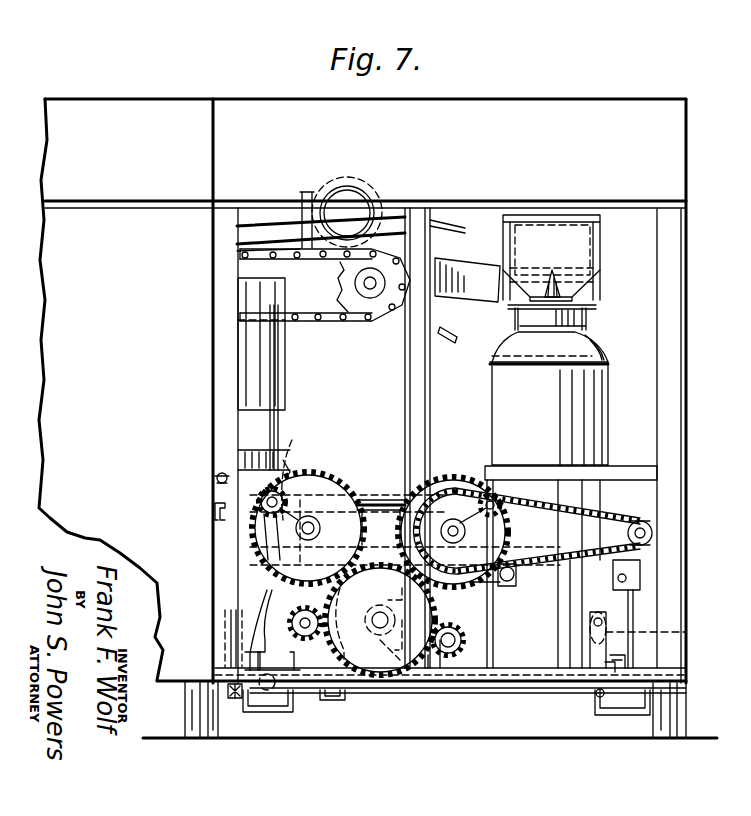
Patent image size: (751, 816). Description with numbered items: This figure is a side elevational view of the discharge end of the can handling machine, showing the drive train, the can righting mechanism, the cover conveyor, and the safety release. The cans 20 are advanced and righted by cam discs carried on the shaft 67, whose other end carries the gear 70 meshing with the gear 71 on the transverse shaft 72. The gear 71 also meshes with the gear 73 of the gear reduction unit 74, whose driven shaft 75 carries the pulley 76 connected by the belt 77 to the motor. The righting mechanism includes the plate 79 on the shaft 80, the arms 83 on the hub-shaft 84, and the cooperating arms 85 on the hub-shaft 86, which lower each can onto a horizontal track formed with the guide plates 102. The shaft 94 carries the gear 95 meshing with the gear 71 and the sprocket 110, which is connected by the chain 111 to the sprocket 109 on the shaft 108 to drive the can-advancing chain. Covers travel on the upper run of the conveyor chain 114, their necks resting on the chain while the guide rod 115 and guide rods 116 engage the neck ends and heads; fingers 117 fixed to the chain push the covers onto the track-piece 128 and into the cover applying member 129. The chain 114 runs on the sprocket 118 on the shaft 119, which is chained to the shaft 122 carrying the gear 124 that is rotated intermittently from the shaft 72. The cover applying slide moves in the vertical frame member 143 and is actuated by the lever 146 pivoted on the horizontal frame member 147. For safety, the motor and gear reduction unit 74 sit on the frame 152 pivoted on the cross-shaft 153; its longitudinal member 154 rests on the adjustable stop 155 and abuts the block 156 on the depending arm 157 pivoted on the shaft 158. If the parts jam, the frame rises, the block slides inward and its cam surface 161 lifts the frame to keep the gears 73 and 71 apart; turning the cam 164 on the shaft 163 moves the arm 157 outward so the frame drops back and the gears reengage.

The container 20 is at (250, 352).
The shaft 67 is at (318, 526).
The gear 70 is at (316, 478).
The gear 71 is at (378, 660).
The transverse shaft 72 is at (380, 610).
The gear 73 is at (305, 610).
The gear reduction unit 74 is at (300, 568).
The driven shaft 75 is at (262, 620).
The pulley 76 is at (225, 626).
The belt 77 is at (232, 700).
The plate 79 is at (250, 472).
The shaft 80 is at (214, 484).
The arms 83 is at (280, 368).
The hub-shaft 84 is at (292, 450).
The arms 85 is at (380, 500).
The hub-shaft 86 is at (500, 496).
The shaft 94 is at (464, 525).
The gear 95 is at (465, 478).
The guide plates 102 is at (616, 474).
The shaft 108 is at (652, 535).
The sprocket 109 is at (650, 522).
The sprocket 110 is at (515, 530).
The chain 111 is at (600, 520).
The conveyor chain 114 is at (252, 258).
The guide rod 115 is at (237, 226).
The guide rods 116 is at (237, 243).
The fingers 117 is at (308, 196).
The sprocket 118 is at (338, 272).
The shaft 119 is at (366, 290).
The shaft 122 is at (462, 632).
The gear 124 is at (462, 642).
The track-piece 128 is at (478, 262).
The hopper 129 is at (575, 192).
The vertical frame member 143 is at (565, 650).
The lever 146 is at (525, 582).
The horizontal frame member 147 is at (498, 598).
The frame 152 is at (432, 696).
The cross-shaft 153 is at (267, 690).
The longitudinal member 154 is at (530, 694).
The adjustable stop 155 is at (598, 700).
The block 156 is at (615, 669).
The depending arm 157 is at (633, 600).
The shaft 158 is at (626, 578).
The cam surface 161 is at (625, 655).
The shaft 163 is at (605, 606).
The cam 164 is at (662, 632).